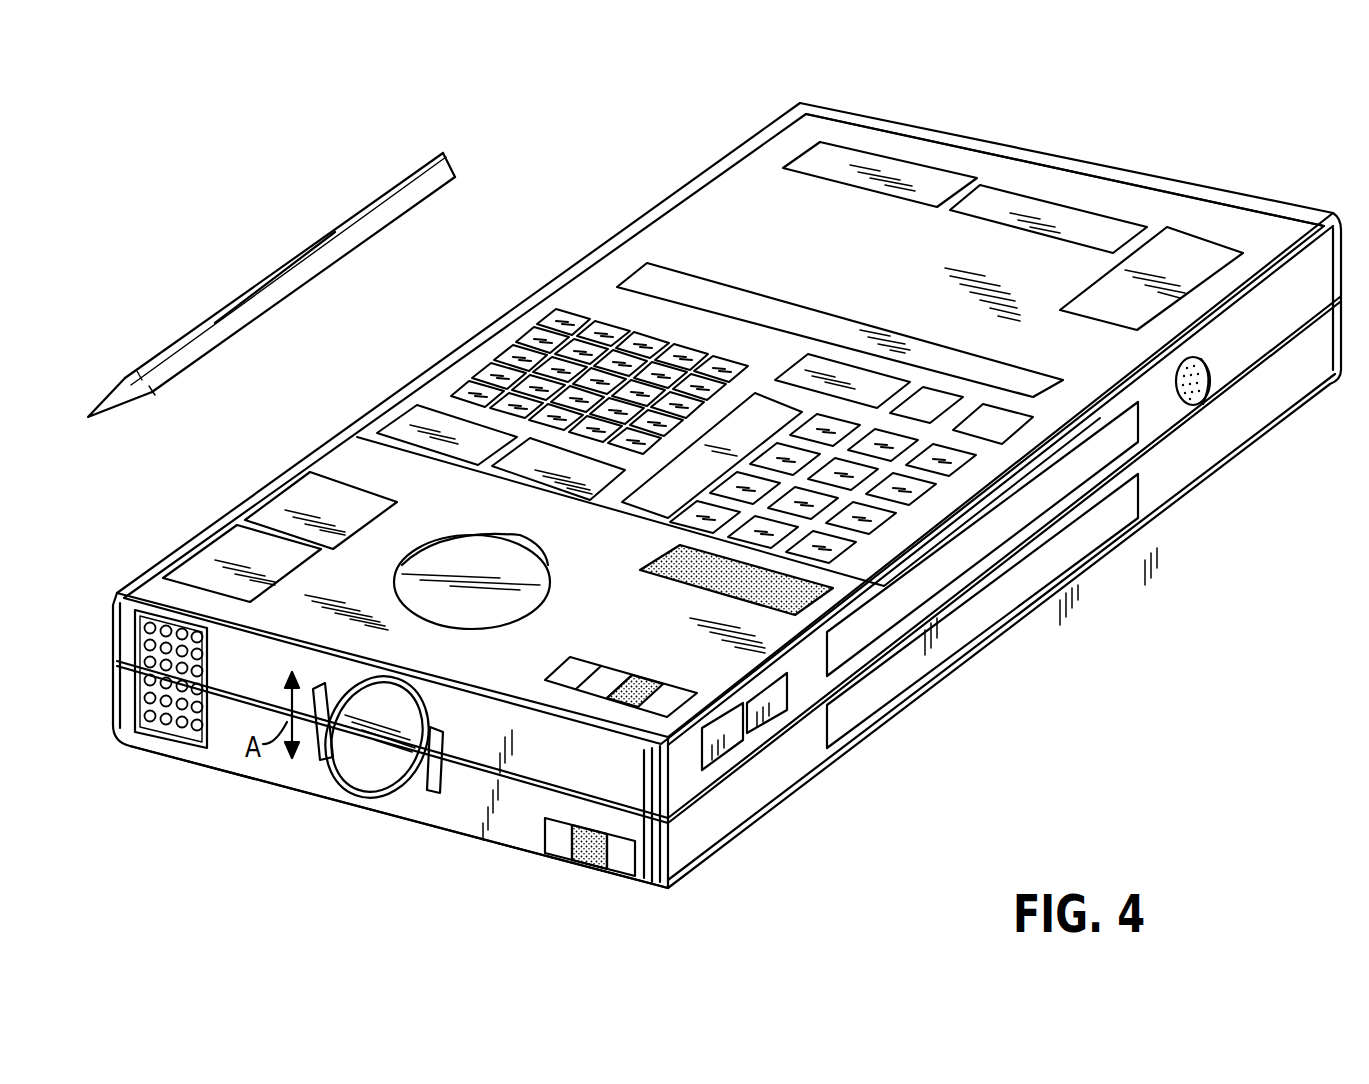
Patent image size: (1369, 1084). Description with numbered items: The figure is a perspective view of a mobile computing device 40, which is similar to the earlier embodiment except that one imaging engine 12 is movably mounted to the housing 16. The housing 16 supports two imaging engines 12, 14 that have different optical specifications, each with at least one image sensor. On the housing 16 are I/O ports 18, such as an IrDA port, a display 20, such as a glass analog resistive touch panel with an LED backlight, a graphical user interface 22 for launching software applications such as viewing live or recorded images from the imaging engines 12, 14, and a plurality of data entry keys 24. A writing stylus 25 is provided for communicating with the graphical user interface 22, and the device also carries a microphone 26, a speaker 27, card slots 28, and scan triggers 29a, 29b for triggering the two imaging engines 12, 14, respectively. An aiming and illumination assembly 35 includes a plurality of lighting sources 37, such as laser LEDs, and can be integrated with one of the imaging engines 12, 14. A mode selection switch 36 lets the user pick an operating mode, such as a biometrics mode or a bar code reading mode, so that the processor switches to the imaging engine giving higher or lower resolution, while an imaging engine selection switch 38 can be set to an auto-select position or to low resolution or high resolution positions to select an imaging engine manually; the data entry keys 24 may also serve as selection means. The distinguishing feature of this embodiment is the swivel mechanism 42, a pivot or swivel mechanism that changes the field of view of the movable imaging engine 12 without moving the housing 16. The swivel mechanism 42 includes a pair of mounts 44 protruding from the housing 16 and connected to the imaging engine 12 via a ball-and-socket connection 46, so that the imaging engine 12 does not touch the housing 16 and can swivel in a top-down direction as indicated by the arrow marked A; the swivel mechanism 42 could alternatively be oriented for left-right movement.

The imaging engine 12 is at (370, 777).
The imaging engine 14 is at (443, 558).
The housing 16 is at (637, 886).
The I/O ports 18 is at (727, 740).
The display 20 is at (1037, 160).
The graphical user interface 22 is at (687, 240).
The data entry keys 24 is at (492, 347).
The writing stylus 25 is at (308, 268).
The microphone 26 is at (1204, 400).
The speaker 27 is at (650, 560).
The card slots 28 is at (1130, 440).
The scan trigger 29a is at (290, 500).
The scan trigger 29b is at (217, 550).
The aiming and illumination assembly 35 is at (140, 630).
The mode selection switch 36 is at (583, 648).
The lighting sources 37 is at (163, 718).
The imaging engine selection switch 38 is at (555, 853).
The mobile computing device 40 is at (174, 198).
The swivel mechanism 42 is at (455, 727).
The mounts 44 is at (435, 782).
The ball-and-socket connection 46 is at (331, 670).